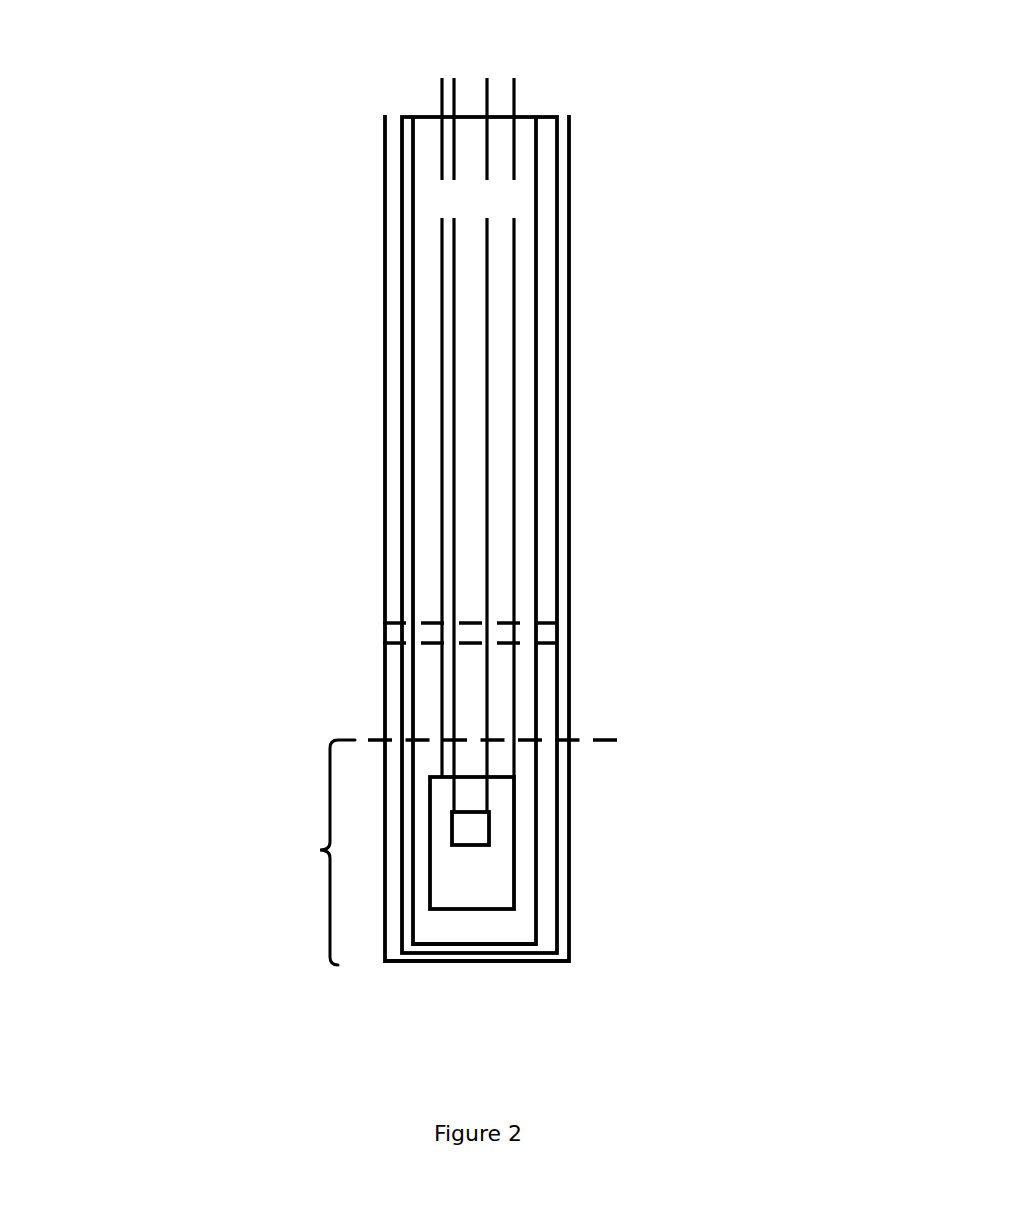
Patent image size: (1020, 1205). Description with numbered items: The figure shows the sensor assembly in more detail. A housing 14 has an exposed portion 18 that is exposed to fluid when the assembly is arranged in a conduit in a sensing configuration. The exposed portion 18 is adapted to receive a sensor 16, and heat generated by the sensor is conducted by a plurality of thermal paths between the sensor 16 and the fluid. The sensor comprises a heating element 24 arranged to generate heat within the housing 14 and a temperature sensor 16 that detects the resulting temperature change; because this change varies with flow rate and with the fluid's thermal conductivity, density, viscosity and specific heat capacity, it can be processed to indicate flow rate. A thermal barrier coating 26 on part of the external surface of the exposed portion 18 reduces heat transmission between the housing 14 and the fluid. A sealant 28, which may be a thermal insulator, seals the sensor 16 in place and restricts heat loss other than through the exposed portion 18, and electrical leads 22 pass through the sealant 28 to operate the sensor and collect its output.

The housing 14 is at (545, 889).
The sensor 16 is at (517, 827).
The exposed portion 18 is at (315, 850).
The electrical leads 22 is at (423, 68).
The heating element 24 is at (473, 879).
The thermal barrier coating 26 is at (561, 938).
The sealant 28 is at (472, 635).